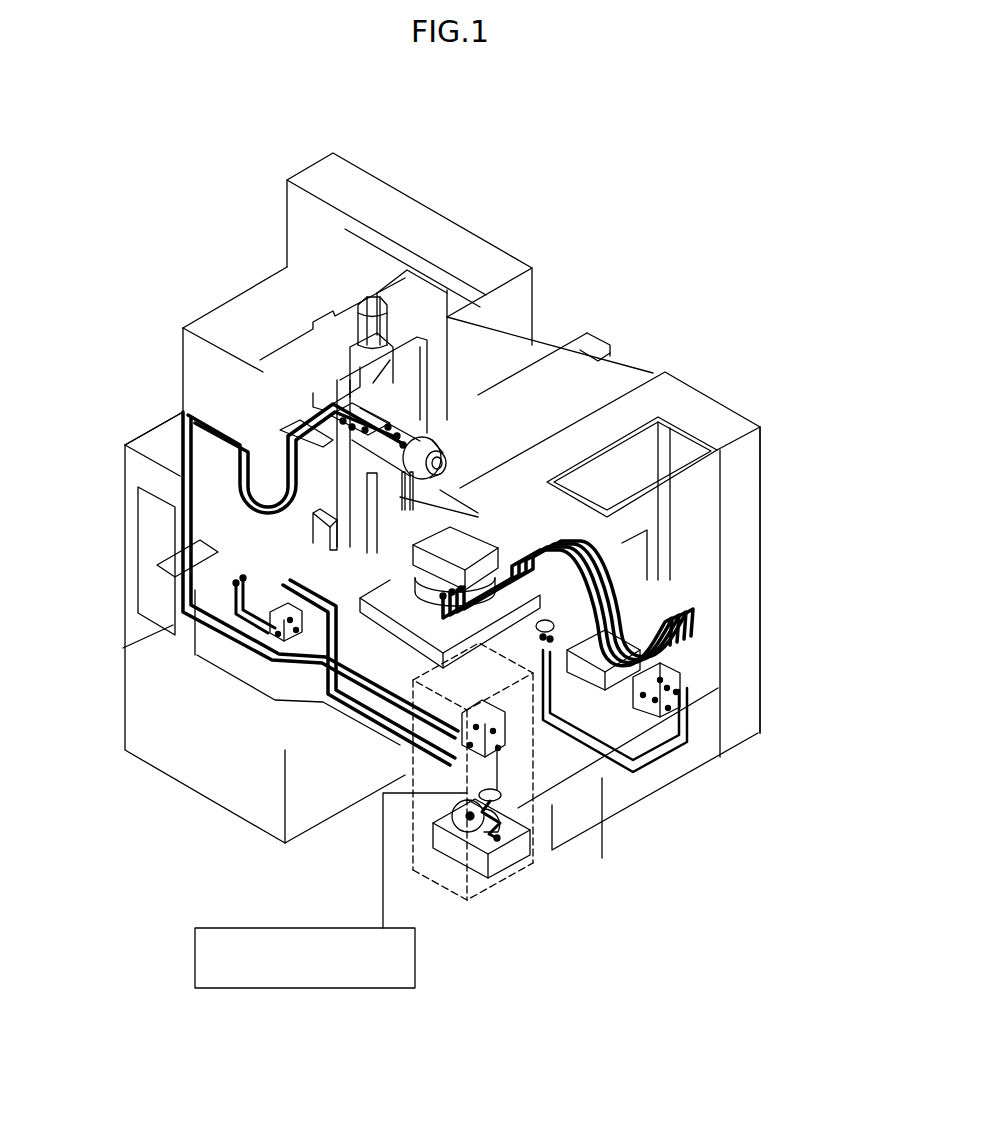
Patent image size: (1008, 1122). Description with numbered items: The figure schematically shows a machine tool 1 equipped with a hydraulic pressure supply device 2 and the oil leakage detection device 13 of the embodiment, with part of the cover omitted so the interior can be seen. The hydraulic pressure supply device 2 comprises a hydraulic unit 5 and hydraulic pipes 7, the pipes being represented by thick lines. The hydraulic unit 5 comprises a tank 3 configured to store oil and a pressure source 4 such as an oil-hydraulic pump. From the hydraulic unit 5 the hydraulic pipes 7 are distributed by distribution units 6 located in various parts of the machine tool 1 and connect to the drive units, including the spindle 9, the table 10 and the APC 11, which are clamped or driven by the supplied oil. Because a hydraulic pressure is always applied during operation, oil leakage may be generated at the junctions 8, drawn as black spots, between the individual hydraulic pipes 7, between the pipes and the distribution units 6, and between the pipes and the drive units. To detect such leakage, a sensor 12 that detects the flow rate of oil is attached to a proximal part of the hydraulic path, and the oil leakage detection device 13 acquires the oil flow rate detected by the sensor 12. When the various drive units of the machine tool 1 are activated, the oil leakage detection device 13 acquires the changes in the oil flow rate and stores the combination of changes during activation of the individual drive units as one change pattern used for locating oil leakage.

The machine tool 1 is at (104, 136).
The hydraulic pressure supply device 2 is at (845, 898).
The tank 3 is at (505, 858).
The pressure source 4 is at (450, 833).
The hydraulic unit 5 is at (428, 905).
The distribution unit 6 is at (387, 318).
The hydraulic pipe 7 is at (195, 616).
The junction 8 is at (397, 433).
The spindle 9 is at (416, 415).
The table 10 is at (480, 519).
The APC 11 is at (550, 645).
The sensor 12 is at (520, 803).
The oil leakage detection device 13 is at (330, 990).